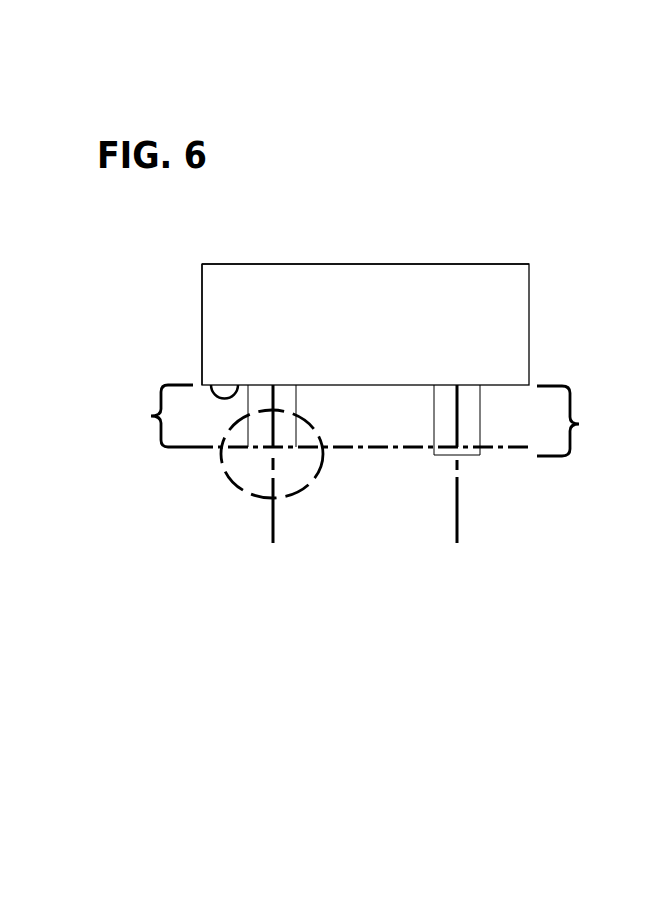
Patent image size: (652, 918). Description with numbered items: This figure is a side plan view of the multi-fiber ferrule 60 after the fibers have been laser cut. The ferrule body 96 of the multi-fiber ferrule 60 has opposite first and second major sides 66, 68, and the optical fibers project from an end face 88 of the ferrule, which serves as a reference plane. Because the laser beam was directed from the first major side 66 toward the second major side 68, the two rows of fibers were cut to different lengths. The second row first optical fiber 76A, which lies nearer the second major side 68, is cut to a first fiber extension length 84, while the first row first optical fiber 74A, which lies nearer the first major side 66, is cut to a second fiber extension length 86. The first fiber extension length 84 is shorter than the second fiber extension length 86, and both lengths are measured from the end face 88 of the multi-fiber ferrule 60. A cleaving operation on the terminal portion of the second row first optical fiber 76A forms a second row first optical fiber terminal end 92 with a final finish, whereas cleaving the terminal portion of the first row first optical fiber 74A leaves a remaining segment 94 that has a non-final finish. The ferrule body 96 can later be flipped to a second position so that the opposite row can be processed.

The multi-fiber ferrule 60 is at (497, 186).
The first major side 66 is at (532, 323).
The second major side 68 is at (200, 322).
The ferrule body 96 is at (362, 275).
The end face 88 is at (238, 385).
The first fiber extension length 84 is at (155, 416).
The second fiber extension length 86 is at (574, 421).
The second row first optical fiber 76A is at (260, 432).
The first row first optical fiber 74A is at (442, 433).
The second row first optical fiber terminal end 92 is at (290, 465).
The remaining segment 94 is at (468, 455).